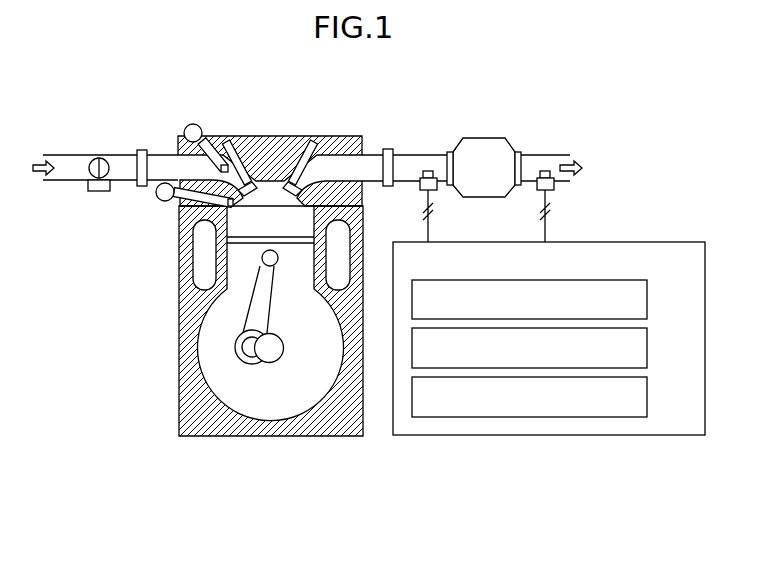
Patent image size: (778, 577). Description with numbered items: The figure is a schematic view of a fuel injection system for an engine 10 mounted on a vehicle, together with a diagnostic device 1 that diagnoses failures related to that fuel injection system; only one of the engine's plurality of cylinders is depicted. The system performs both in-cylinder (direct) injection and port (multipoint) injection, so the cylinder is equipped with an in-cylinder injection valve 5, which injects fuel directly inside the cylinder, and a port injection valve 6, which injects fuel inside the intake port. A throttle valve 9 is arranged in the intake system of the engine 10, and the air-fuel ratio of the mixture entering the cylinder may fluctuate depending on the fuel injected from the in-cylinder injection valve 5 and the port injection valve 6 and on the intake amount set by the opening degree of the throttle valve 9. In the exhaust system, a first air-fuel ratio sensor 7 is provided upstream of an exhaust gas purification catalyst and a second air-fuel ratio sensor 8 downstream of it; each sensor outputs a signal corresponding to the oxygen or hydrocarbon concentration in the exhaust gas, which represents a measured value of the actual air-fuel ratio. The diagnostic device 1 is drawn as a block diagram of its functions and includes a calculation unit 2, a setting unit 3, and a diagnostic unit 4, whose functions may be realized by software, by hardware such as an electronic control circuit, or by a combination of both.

The diagnostic device 1 is at (705, 263).
The calculation unit 2 is at (647, 302).
The setting unit 3 is at (647, 350).
The diagnostic unit 4 is at (647, 399).
The in-cylinder injection valve 5 is at (170, 201).
The port injection valve 6 is at (201, 139).
The first air-fuel ratio sensor 7 is at (420, 191).
The second air-fuel ratio sensor 8 is at (537, 191).
The throttle valve 9 is at (96, 191).
The engine 10 is at (291, 113).